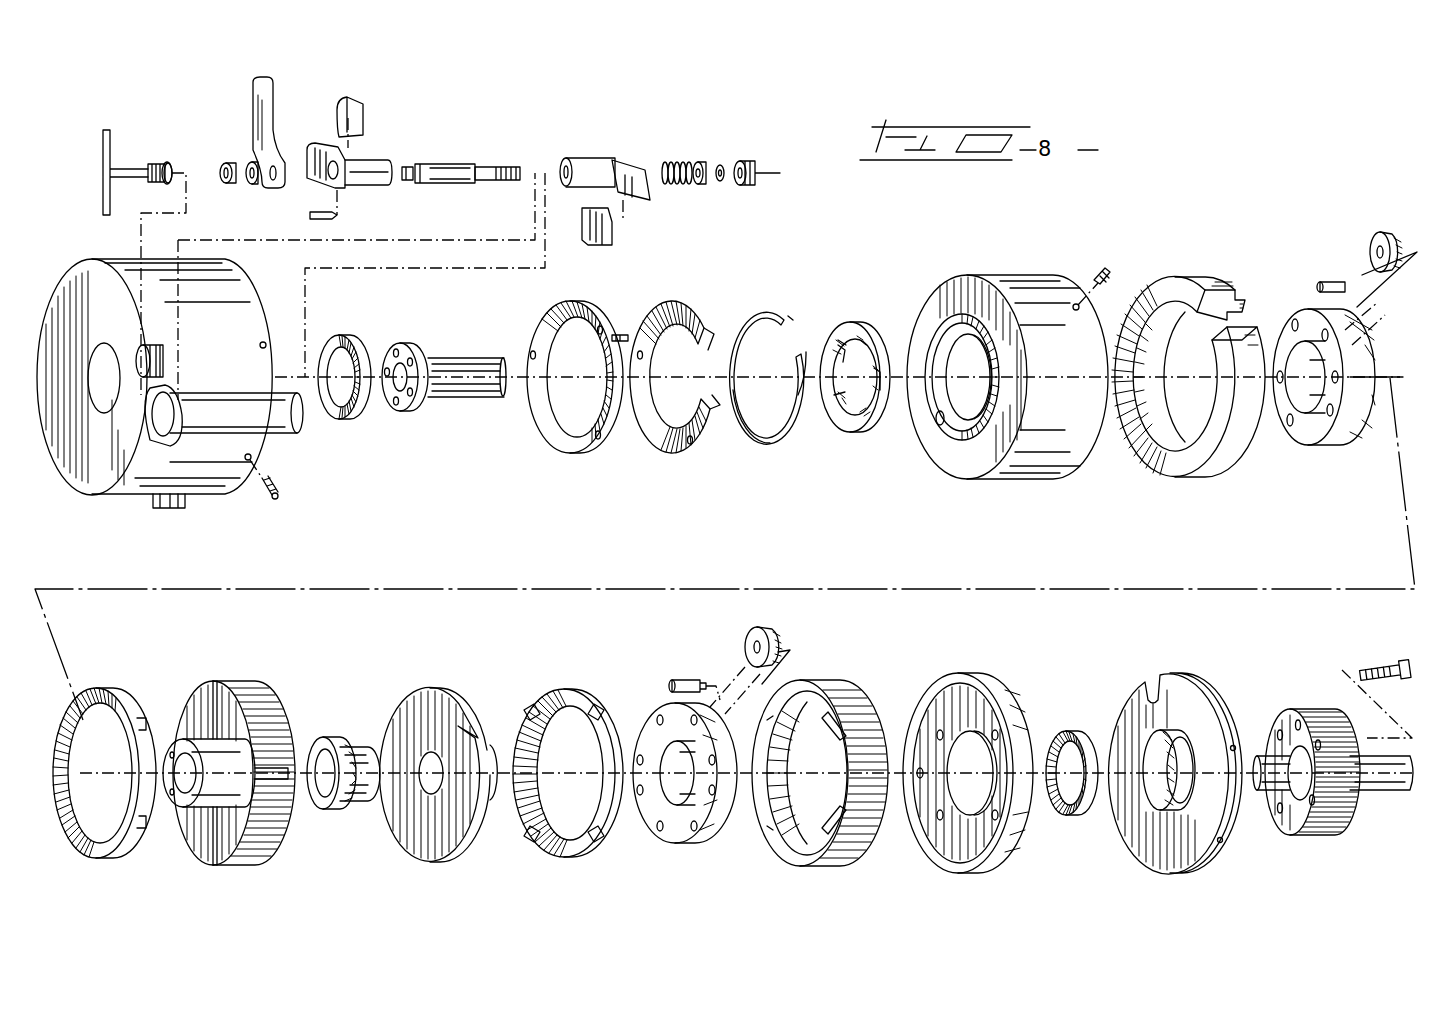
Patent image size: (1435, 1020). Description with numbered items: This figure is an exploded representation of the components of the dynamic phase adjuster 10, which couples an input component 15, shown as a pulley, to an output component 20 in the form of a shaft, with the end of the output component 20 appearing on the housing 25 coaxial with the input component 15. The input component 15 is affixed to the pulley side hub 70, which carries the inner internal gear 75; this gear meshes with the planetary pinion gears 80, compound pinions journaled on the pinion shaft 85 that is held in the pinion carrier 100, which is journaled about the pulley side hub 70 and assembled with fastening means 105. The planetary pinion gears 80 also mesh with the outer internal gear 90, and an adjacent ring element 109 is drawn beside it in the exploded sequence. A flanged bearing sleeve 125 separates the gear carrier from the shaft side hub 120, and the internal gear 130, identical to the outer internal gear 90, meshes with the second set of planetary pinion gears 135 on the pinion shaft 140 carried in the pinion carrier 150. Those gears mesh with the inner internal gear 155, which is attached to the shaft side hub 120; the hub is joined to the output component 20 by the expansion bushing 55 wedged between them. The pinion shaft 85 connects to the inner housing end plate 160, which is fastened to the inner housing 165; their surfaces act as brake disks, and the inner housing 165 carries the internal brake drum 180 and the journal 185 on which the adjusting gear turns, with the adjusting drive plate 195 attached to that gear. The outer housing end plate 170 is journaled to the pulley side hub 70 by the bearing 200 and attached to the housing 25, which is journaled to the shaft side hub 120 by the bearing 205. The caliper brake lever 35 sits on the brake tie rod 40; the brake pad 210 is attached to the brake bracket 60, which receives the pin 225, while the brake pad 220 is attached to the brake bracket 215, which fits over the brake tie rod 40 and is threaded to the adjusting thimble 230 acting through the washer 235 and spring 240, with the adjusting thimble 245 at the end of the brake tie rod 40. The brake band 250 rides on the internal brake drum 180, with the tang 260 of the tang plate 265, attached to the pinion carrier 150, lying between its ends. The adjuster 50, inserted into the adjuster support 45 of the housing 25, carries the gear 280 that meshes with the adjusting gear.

The dynamic phase adjuster 10 is at (170, 80).
The input component 15 is at (1320, 822).
The output component 20 is at (1380, 791).
The housing 25 is at (120, 312).
The caliper brake lever 35 is at (278, 95).
The brake tie rod 40 is at (440, 165).
The adjuster support 45 is at (146, 396).
The adjuster 50 is at (104, 168).
The expansion bushing 55 is at (410, 343).
The brake bracket 60 is at (372, 162).
The pulley side hub 70 is at (452, 692).
The inner internal gear 75 is at (578, 694).
The planetary pinion gears 80 is at (754, 628).
The pinion shaft 85 is at (678, 680).
The outer internal gear 90 is at (836, 681).
The pinion carrier 100 is at (678, 826).
The fastening means 105 is at (252, 185).
The ring 109 is at (596, 308).
The shaft side hub 120 is at (255, 694).
The flanged bearing sleeve 125 is at (330, 740).
The internal gear 130 is at (1190, 280).
The planetary pinion gears 135 is at (1378, 236).
The pinion shaft 140 is at (1320, 282).
The pinion carrier 150 is at (1308, 425).
The inner internal gear 155 is at (112, 692).
The inner housing end plate 160 is at (976, 680).
The inner housing 165 is at (980, 284).
The outer housing end plate 170 is at (1205, 678).
The internal brake drum 180 is at (940, 420).
The journal 185 is at (942, 318).
The adjusting drive plate 195 is at (678, 306).
The bearing 200 is at (1068, 733).
The bearing 205 is at (344, 335).
The brake pad 210 is at (366, 112).
The brake bracket 215 is at (617, 160).
The brake pad 220 is at (615, 241).
The pin 225 is at (337, 217).
The adjusting thimble 230 is at (748, 160).
The washer 235 is at (703, 185).
The spring 240 is at (668, 162).
The adjusting thimble 245 is at (720, 164).
The brake band 250 is at (766, 311).
The tang 260 is at (873, 322).
The tang plate 265 is at (840, 347).
The gear 280 is at (164, 165).